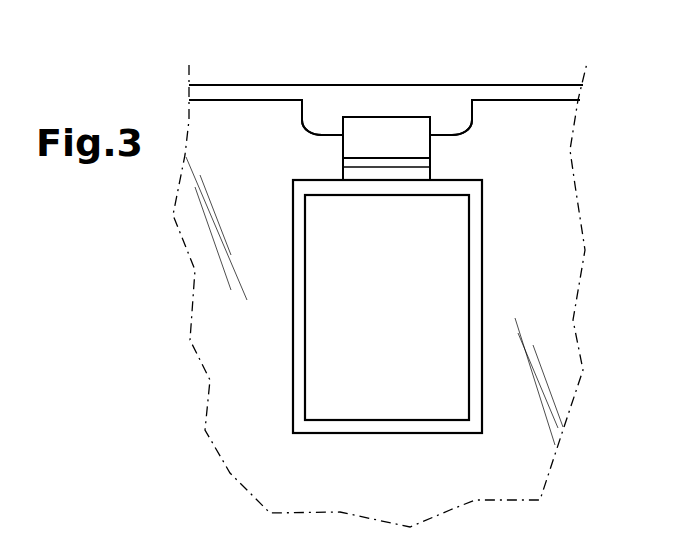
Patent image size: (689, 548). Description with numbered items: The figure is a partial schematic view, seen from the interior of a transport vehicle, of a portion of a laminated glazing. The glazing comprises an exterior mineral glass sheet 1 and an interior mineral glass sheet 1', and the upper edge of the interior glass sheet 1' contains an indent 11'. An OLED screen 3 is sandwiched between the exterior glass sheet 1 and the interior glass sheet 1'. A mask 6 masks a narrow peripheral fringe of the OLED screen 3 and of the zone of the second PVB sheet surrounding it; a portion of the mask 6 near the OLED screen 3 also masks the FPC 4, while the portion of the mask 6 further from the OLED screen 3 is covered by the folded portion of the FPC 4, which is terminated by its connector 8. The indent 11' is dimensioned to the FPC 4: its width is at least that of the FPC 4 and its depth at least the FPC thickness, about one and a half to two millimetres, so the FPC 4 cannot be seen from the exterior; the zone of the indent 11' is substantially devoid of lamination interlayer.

The exterior mineral glass sheet 1 is at (386, 73).
The interior mineral glass sheet 1' is at (402, 295).
The indent 11' is at (387, 73).
The FPC 4 is at (375, 133).
The connector 8 is at (343, 163).
The mask 6 is at (422, 176).
The OLED screen 3 is at (443, 285).